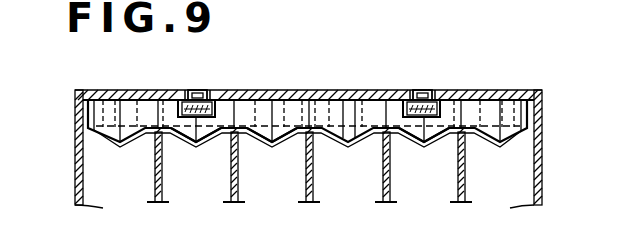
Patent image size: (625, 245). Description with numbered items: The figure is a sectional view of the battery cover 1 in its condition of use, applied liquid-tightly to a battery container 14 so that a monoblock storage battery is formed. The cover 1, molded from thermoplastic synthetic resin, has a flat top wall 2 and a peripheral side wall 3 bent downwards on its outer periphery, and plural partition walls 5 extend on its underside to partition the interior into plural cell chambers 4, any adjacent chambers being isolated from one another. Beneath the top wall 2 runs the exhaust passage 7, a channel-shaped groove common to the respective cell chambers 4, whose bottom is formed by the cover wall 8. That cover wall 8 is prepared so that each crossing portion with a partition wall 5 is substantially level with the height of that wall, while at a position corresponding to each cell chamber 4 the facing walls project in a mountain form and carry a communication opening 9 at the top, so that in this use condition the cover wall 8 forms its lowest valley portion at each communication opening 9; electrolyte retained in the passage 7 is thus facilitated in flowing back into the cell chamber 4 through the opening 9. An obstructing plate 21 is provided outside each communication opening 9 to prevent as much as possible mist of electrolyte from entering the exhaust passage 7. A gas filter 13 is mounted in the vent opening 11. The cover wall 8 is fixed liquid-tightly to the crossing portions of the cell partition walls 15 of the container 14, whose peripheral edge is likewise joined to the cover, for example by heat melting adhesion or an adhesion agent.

The battery cover 1 is at (72, 116).
The flat top wall 2 is at (112, 89).
The peripheral side wall 3 is at (542, 108).
The cell chamber 4 is at (260, 183).
The partition wall 5 is at (310, 89).
The exhaust passage 7 is at (362, 89).
The cover wall 8 is at (208, 143).
The communication opening 9 is at (127, 142).
The vent opening 11 is at (197, 89).
The gas filter 13 is at (207, 89).
The battery container 14 is at (65, 159).
The cell partition wall 15 is at (229, 185).
The obstructing plate 21 is at (262, 89).